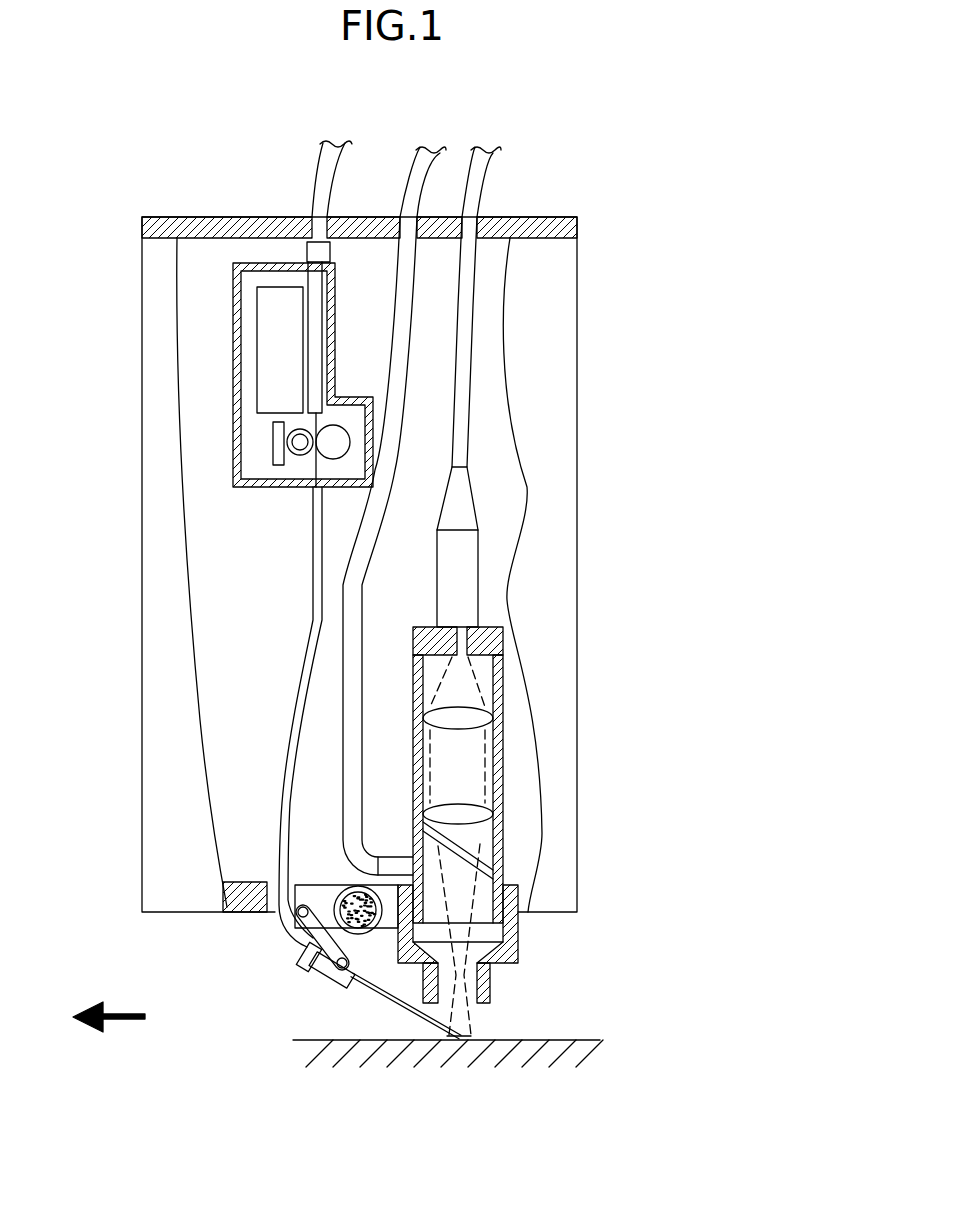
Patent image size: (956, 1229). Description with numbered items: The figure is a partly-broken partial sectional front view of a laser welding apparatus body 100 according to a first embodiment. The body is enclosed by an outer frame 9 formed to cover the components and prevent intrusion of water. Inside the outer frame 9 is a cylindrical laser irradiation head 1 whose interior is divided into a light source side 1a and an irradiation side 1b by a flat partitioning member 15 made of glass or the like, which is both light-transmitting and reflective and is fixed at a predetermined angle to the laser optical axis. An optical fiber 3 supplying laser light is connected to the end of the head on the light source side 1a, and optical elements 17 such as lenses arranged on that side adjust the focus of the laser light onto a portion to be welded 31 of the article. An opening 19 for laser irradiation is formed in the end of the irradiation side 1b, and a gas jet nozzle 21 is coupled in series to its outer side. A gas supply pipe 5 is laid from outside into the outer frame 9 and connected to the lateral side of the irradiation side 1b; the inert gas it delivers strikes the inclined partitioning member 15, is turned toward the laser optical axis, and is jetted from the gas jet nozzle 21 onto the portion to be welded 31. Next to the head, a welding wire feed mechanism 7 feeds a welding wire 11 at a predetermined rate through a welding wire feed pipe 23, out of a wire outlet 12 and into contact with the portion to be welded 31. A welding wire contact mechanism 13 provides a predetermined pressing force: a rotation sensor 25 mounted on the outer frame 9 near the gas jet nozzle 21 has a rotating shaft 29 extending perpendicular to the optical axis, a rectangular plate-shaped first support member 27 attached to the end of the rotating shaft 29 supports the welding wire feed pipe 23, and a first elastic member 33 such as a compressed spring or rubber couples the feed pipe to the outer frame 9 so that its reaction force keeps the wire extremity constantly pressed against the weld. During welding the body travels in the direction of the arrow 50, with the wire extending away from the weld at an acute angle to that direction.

The laser welding apparatus body 100 is at (548, 198).
The outer frame 9 is at (577, 256).
The welding wire feed mechanism 7 is at (233, 327).
The gas supply pipe 5 is at (417, 165).
The optical fiber 3 is at (460, 325).
The laser irradiation head 1 is at (498, 608).
The light source side 1a is at (487, 677).
The optical elements 17 is at (480, 722).
The partitioning member 15 is at (462, 846).
The irradiation side 1b is at (483, 886).
The opening 19 is at (490, 942).
The gas jet nozzle 21 is at (490, 1003).
The portion to be welded 31 is at (478, 1020).
The rotation sensor 25 is at (310, 882).
The rotating shaft 29 is at (347, 883).
The first support member 27 is at (357, 933).
The welding wire feed pipe 23 is at (277, 930).
The first elastic member 33 is at (308, 968).
The welding wire contact mechanism 13 is at (328, 998).
The wire outlet 12 is at (442, 1032).
The welding wire 11 is at (453, 1040).
The arrow 50 is at (125, 1015).